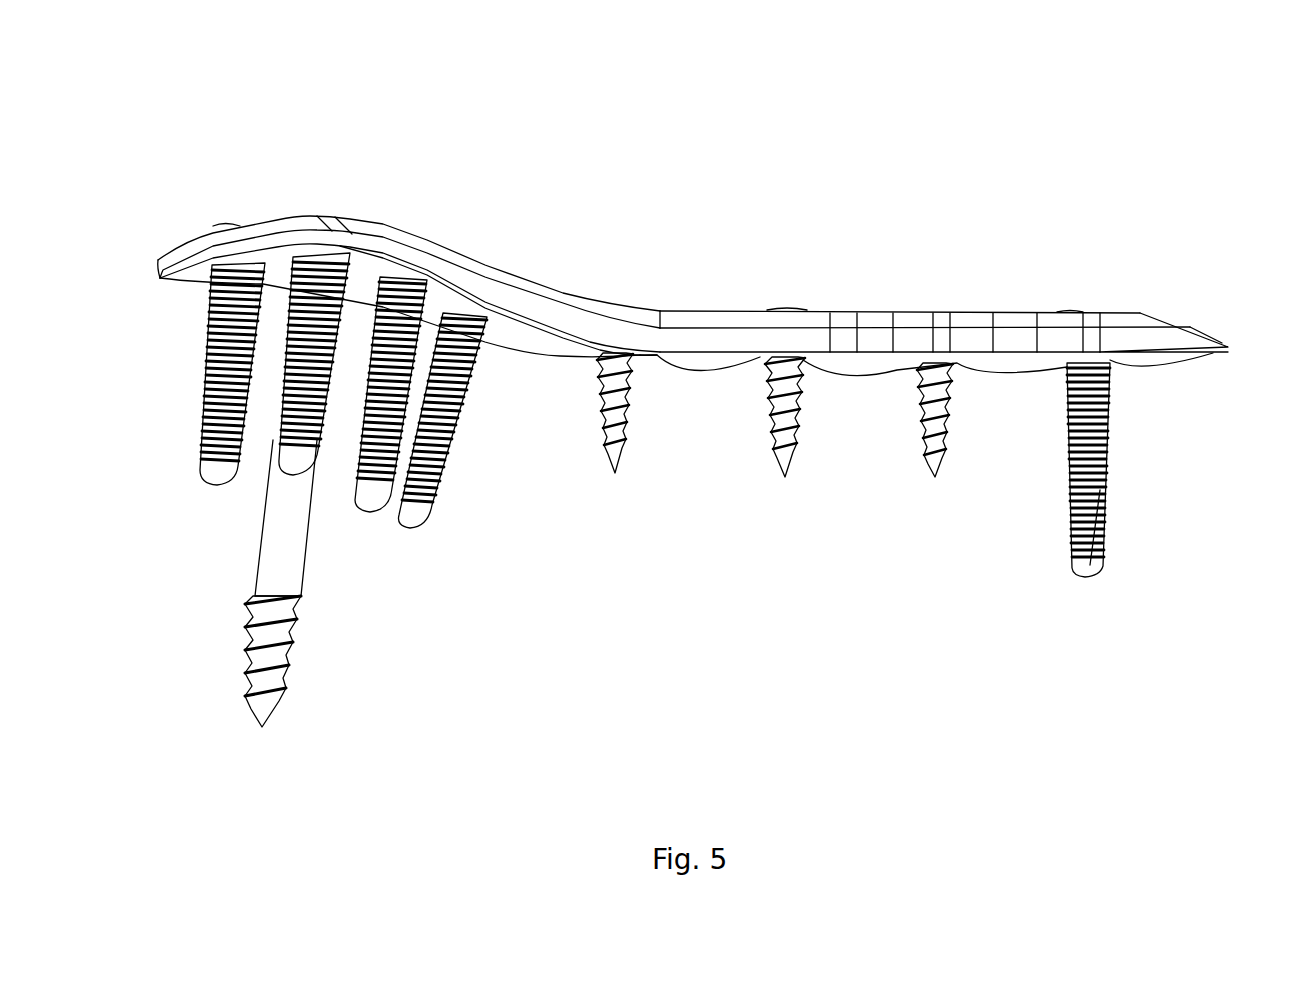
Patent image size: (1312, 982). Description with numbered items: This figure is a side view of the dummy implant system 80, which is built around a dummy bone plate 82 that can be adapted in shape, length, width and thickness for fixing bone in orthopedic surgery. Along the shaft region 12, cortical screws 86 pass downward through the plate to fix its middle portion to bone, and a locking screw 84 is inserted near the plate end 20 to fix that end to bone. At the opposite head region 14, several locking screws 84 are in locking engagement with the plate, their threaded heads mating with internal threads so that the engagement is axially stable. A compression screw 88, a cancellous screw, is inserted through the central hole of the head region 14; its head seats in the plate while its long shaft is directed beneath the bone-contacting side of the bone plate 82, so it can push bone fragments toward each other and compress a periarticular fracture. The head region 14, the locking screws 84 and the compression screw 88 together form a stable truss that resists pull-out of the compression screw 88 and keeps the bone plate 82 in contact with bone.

The shaft region 12 is at (970, 337).
The head region 14 is at (283, 224).
The plate end 20 is at (1190, 337).
The implant system 80 is at (1128, 168).
The dummy bone plate 82 is at (707, 327).
The locking screw 84 is at (207, 355).
The cortical screw 86 is at (795, 440).
The compression screw 88 is at (287, 537).